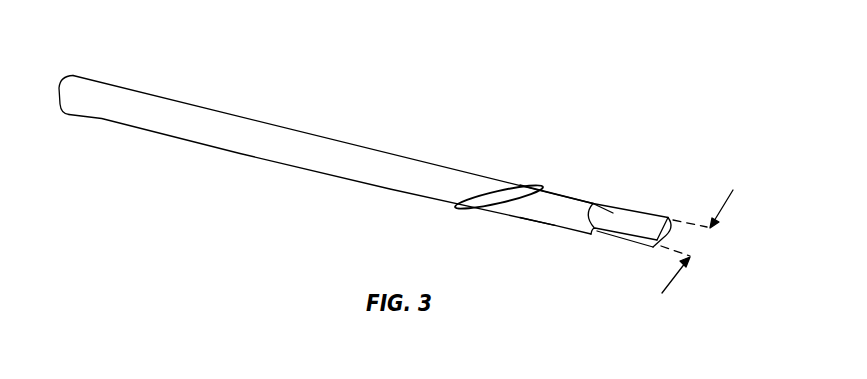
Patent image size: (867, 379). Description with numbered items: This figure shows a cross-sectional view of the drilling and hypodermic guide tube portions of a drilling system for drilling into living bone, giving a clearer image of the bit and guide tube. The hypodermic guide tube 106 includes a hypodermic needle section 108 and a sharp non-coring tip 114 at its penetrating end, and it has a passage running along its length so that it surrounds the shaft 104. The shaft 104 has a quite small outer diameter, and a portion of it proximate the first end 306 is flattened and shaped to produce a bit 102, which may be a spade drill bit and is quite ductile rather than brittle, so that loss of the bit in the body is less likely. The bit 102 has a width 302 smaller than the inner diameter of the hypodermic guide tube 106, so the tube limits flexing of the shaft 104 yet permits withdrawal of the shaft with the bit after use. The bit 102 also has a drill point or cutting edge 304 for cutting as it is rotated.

The bit 102 is at (629, 223).
The shaft 104 is at (560, 198).
The hypodermic guide tube 106 is at (382, 159).
The hypodermic needle section 108 is at (347, 144).
The sharp non-coring tip 114 is at (507, 184).
The width 302 is at (675, 278).
The cutting edge 304 is at (667, 236).
The first end 306 is at (548, 225).